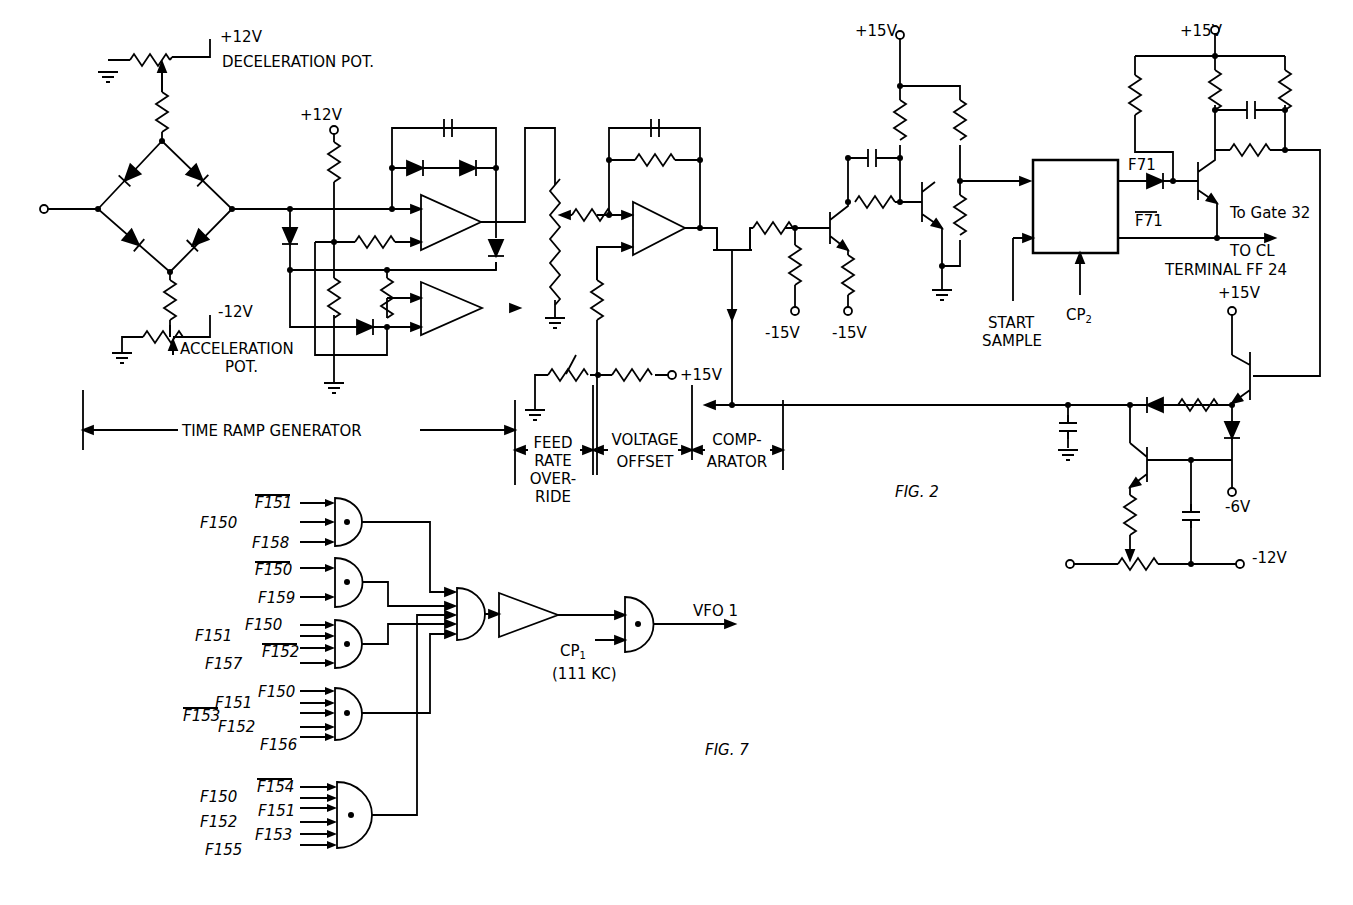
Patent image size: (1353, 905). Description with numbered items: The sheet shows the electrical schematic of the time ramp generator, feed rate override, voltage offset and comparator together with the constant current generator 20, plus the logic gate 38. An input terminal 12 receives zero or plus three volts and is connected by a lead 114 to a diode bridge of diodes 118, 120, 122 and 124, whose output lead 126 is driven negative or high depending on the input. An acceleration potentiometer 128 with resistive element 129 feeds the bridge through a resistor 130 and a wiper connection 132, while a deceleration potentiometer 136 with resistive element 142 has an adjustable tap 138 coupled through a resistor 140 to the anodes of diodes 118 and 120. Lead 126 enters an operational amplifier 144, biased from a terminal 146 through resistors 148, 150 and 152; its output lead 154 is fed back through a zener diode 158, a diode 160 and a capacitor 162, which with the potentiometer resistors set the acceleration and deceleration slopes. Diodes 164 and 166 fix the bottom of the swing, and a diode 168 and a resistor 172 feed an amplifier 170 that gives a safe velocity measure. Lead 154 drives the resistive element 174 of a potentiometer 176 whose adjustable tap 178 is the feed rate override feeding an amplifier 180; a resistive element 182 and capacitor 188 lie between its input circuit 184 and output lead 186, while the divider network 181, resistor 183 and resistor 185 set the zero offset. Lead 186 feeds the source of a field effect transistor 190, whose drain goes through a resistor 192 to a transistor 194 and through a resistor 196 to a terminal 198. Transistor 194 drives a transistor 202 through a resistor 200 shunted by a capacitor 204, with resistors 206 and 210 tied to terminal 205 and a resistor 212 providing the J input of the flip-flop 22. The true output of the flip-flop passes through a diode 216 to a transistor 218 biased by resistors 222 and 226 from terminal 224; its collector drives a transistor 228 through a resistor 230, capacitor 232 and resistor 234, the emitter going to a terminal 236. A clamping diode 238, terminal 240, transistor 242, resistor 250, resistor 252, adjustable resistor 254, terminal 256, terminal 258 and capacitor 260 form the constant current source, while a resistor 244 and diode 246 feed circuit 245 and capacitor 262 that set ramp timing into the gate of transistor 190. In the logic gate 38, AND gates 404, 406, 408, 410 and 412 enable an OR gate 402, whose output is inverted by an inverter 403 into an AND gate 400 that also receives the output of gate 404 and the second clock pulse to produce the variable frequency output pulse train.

In FIG. 2, the input terminal 12 is at (42, 205).
In FIG. 2, the lead 114 is at (68, 206).
In FIG. 2, the diode 118 is at (128, 168).
In FIG. 2, the diode 120 is at (202, 168).
In FIG. 2, the diode 122 is at (208, 241).
In FIG. 2, the diode 124 is at (140, 238).
In FIG. 2, the output lead 126 is at (258, 207).
In FIG. 2, the acceleration potentiometer 128 is at (173, 355).
In FIG. 2, the resistive element 129 is at (150, 345).
In FIG. 2, the resistor 130 is at (165, 292).
In FIG. 2, the wiper lead 132 is at (166, 330).
In FIG. 2, the deceleration potentiometer 136 is at (146, 52).
In FIG. 2, the adjustable tap 138 is at (170, 86).
In FIG. 2, the resistor 140 is at (170, 116).
In FIG. 2, the resistive element 142 is at (159, 47).
In FIG. 2, the operational amplifier 144 is at (450, 205).
In FIG. 2, the terminal 146 is at (338, 127).
In FIG. 2, the resistor 148 is at (340, 156).
In FIG. 2, the resistor 150 is at (370, 236).
In FIG. 2, the resistor 152 is at (338, 284).
In FIG. 2, the output lead 154 is at (502, 240).
In FIG. 2, the zener diode 158 is at (470, 160).
In FIG. 2, the diode 160 is at (414, 160).
In FIG. 2, the capacitor 162 is at (448, 118).
In FIG. 2, the diode 164 is at (287, 242).
In FIG. 2, the diode 166 is at (497, 268).
In FIG. 2, the diode 168 is at (372, 336).
In FIG. 2, the operational amplifier 170 is at (472, 322).
In FIG. 2, the resistor 172 is at (392, 282).
In FIG. 2, the resistive element 174 is at (574, 210).
In FIG. 2, the potentiometer 176 is at (562, 168).
In FIG. 2, the adjustable tap 178 is at (560, 258).
In FIG. 2, the amplifier 180 is at (660, 208).
In FIG. 2, the resistive divider network 181 is at (575, 350).
In FIG. 2, the resistive element 182 is at (676, 158).
In FIG. 2, the resistor 183 is at (636, 362).
In FIG. 2, the input circuit 184 is at (618, 230).
In FIG. 2, the resistor 185 is at (603, 290).
In FIG. 2, the output lead 186 is at (685, 240).
In FIG. 2, the capacitor 188 is at (658, 118).
In FIG. 2, the field effect transistor 190 is at (735, 240).
In FIG. 2, the resistor 192 is at (768, 222).
In FIG. 2, the transistor 194 is at (838, 228).
In FIG. 2, the resistor 196 is at (790, 280).
In FIG. 2, the terminal 198 is at (790, 311).
In FIG. 2, the resistor 200 is at (865, 200).
In FIG. 2, the transistor 202 is at (932, 172).
In FIG. 2, the capacitor 204 is at (872, 148).
In FIG. 2, the terminal 205 is at (904, 35).
In FIG. 2, the resistor 206 is at (905, 110).
In FIG. 2, the resistor 210 is at (966, 128).
In FIG. 2, the resistor 212 is at (966, 220).
In FIG. 2, the flip-flop 22 is at (1090, 160).
In FIG. 2, the diode 216 is at (1155, 190).
In FIG. 2, the transistor 218 is at (1198, 200).
In FIG. 2, the resistor 222 is at (1132, 88).
In FIG. 2, the terminal 224 is at (1219, 30).
In FIG. 2, the resistor 226 is at (1212, 78).
In FIG. 2, the transistor 228 is at (1255, 362).
In FIG. 2, the resistor 230 is at (1256, 158).
In FIG. 2, the capacitor 232 is at (1246, 110).
In FIG. 2, the resistor 234 is at (1282, 78).
In FIG. 2, the terminal 236 is at (1236, 311).
In FIG. 2, the clamping diode 238 is at (1246, 423).
In FIG. 2, the terminal 240 is at (1237, 492).
In FIG. 2, the transistor 242 is at (1140, 462).
In FIG. 2, the resistor 244 is at (1195, 396).
In FIG. 2, the circuit 245 is at (1022, 405).
In FIG. 2, the diode 246 is at (1158, 398).
In FIG. 2, the resistor 250 is at (1125, 510).
In FIG. 2, the resistor 252 is at (1158, 570).
In FIG. 2, the adjustable resistor 254 is at (1190, 582).
In FIG. 2, the terminal 256 is at (1240, 560).
In FIG. 2, the terminal 258 is at (1122, 572).
In FIG. 2, the capacitor 260 is at (1180, 522).
In FIG. 2, the capacitor 262 is at (1055, 432).
In FIG. 2, the constant current generator 20 is at (1174, 659).
In FIG. 7, the AND gate 400 is at (636, 600).
In FIG. 7, the OR gate 402 is at (476, 598).
In FIG. 7, the inverter 403 is at (540, 600).
In FIG. 7, the AND gate 404 is at (360, 792).
In FIG. 7, the AND gate 406 is at (352, 506).
In FIG. 7, the AND gate 408 is at (352, 570).
In FIG. 7, the AND gate 410 is at (360, 630).
In FIG. 7, the AND gate 412 is at (358, 698).
In FIG. 7, the logic gate 38 is at (512, 757).